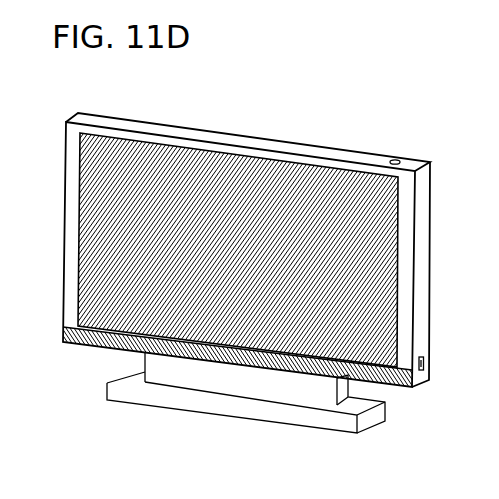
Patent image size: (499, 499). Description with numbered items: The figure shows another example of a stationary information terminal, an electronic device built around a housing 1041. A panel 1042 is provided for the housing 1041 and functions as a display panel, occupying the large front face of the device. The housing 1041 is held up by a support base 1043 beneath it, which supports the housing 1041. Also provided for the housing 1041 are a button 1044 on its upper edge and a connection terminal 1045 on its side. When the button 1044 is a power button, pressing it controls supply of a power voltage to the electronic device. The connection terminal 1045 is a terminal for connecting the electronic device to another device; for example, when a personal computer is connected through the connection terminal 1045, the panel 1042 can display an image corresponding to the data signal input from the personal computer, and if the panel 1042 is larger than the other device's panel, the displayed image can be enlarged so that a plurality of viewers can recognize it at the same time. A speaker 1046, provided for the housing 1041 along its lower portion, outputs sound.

The housing 1041 is at (72, 184).
The panel 1042 is at (263, 187).
The support base 1043 is at (238, 392).
The button 1044 is at (397, 158).
The connection terminal 1045 is at (421, 382).
The speaker 1046 is at (100, 347).